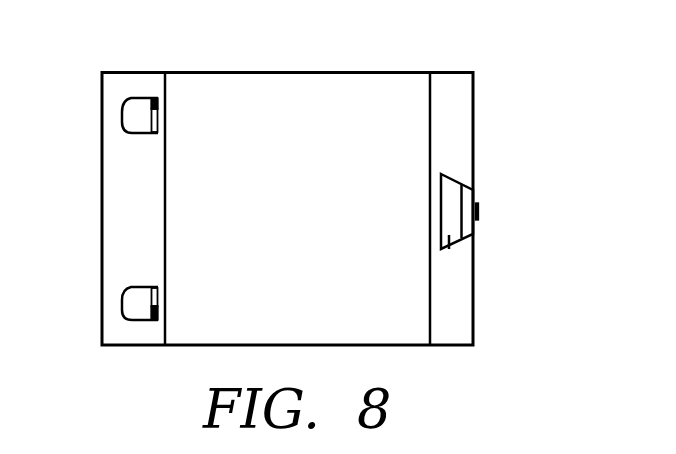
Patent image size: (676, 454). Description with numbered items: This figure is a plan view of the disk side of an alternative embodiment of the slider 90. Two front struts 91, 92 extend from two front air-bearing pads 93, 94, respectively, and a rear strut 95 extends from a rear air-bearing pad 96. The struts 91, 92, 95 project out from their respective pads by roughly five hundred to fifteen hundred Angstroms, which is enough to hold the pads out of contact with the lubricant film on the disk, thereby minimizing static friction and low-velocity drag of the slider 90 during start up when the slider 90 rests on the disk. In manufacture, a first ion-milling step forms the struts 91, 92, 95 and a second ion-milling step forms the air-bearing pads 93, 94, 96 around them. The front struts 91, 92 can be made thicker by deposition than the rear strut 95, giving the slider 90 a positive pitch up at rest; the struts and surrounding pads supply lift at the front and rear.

The slider 90 is at (241, 63).
The front strut 91 is at (157, 99).
The front strut 92 is at (155, 320).
The front air-bearing pad 93 is at (135, 112).
The front air-bearing pad 94 is at (138, 312).
The rear strut 95 is at (470, 198).
The rear air-bearing pad 96 is at (450, 238).